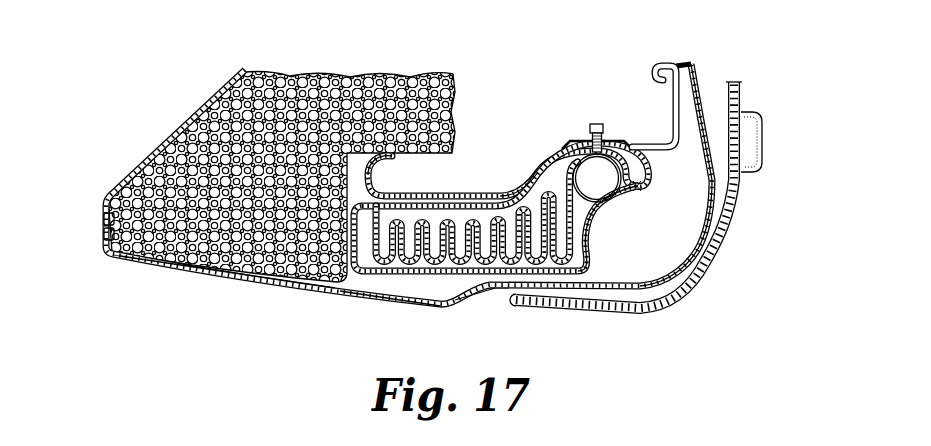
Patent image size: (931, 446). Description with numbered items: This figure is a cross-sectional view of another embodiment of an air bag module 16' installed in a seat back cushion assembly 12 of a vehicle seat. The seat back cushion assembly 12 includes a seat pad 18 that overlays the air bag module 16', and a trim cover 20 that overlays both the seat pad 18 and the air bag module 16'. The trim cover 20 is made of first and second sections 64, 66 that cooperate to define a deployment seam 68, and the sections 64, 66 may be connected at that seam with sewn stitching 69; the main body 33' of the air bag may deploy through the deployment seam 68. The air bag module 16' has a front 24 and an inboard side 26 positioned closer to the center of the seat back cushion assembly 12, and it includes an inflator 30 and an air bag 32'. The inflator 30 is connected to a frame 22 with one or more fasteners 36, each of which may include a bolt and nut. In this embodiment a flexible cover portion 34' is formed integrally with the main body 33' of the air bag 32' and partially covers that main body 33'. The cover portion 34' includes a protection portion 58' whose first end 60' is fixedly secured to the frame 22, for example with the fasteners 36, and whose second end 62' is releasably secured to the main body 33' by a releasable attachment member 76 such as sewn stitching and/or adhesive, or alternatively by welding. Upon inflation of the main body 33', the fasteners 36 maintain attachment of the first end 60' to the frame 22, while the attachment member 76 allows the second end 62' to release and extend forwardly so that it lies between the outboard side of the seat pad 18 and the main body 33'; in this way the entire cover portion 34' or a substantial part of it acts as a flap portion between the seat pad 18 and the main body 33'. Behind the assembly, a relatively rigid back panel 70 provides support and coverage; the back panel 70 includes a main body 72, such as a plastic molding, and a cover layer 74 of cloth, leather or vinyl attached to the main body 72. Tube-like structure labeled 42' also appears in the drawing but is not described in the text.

The seat back cushion assembly 12 is at (160, 80).
The air bag module 16' is at (682, 175).
The seat pad 18 is at (223, 193).
The trim cover 20 is at (132, 266).
The frame 22 is at (671, 118).
The front 24 is at (346, 219).
The inboard side 26 is at (442, 194).
The inflator 30 is at (606, 187).
The air bag 32' is at (477, 181).
The main body 33' is at (368, 309).
The cover portion 34' is at (434, 306).
The fasteners 36 is at (597, 122).
The tube 42' is at (500, 156).
The protection portion 58' is at (398, 184).
The first end 60' is at (598, 117).
The second end 62' is at (613, 221).
The first section 64 is at (160, 148).
The second section 66 is at (242, 270).
The deployment seam 68 is at (100, 236).
The sewn stitching 69 is at (99, 218).
The back panel 70 is at (722, 256).
The main body 72 is at (697, 272).
The cover layer 74 is at (742, 190).
The releasable attachment member 76 is at (588, 266).